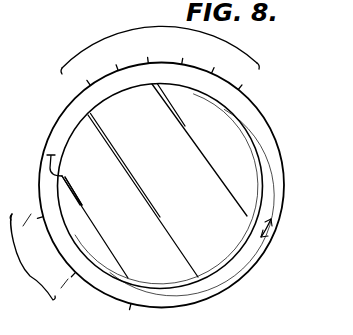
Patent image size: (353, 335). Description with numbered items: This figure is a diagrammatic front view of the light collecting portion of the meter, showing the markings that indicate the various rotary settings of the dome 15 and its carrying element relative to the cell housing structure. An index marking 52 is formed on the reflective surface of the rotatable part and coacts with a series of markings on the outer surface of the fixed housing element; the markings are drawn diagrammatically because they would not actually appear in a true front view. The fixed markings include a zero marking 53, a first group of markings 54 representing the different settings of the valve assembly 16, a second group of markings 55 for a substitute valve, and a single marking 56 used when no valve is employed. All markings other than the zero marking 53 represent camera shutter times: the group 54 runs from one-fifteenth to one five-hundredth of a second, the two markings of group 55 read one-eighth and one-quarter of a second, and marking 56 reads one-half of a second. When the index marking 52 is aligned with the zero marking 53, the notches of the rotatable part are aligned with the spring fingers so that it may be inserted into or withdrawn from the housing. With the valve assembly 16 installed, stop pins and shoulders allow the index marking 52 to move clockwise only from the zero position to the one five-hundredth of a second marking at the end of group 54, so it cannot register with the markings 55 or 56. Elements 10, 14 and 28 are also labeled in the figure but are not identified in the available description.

The shutter speed dial 10 is at (286, 145).
The dome 15 is at (204, 228).
The camera body 28 is at (50, 16).
The lens mount 14 is at (3, 183).
The valve assembly 16 is at (0, 205).
The index marking 52 is at (63, 176).
The zero marking 53 is at (34, 143).
The first group of markings 54 is at (133, 29).
The second group of markings 55 is at (32, 258).
The marking 56 is at (117, 314).